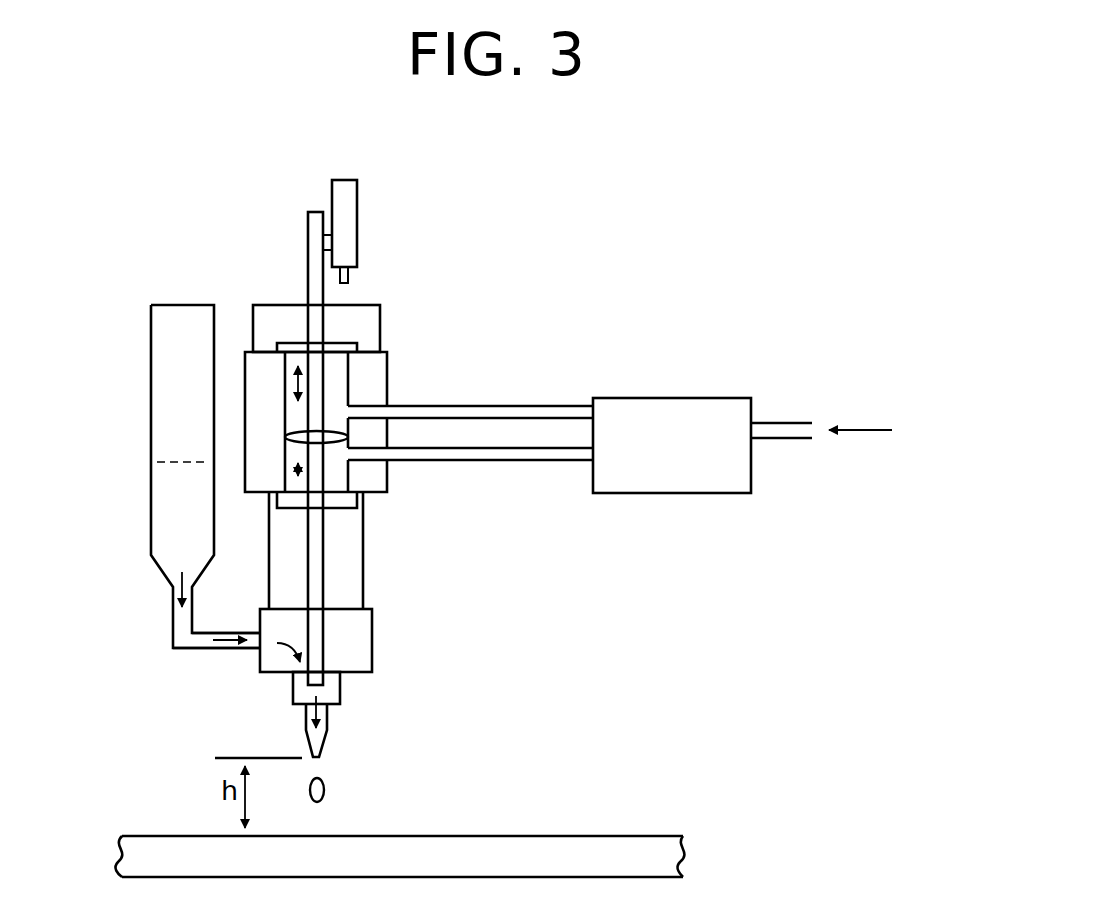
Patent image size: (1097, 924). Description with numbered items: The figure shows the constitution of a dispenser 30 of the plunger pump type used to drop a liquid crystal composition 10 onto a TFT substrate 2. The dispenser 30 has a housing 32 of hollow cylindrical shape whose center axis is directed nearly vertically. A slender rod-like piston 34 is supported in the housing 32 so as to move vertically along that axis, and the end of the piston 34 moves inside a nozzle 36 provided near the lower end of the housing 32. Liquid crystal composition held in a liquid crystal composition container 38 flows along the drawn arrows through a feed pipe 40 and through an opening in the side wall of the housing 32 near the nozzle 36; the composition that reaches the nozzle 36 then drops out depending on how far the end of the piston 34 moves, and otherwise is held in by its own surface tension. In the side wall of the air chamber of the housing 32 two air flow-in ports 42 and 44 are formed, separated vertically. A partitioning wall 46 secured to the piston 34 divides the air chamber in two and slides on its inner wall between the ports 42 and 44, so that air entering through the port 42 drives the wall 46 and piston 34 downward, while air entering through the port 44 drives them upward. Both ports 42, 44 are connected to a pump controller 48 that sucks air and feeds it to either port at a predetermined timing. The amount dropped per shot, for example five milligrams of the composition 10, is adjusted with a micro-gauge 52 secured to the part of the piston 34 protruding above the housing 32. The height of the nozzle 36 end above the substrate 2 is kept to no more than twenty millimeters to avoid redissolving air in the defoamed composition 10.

The TFT substrate 2 is at (683, 857).
The liquid crystal composition 10 is at (325, 790).
The dispenser 30 is at (352, 468).
The housing 32 is at (363, 575).
The piston 34 is at (308, 245).
The nozzle 36 is at (328, 727).
The liquid crystal composition container 38 is at (158, 391).
The feed pipe 40 is at (189, 650).
The air flow-in port 42 is at (497, 406).
The air flow-in port 44 is at (513, 461).
The partitioning wall 46 is at (300, 438).
The pump controller 48 is at (671, 398).
The micro-gauge 52 is at (357, 218).